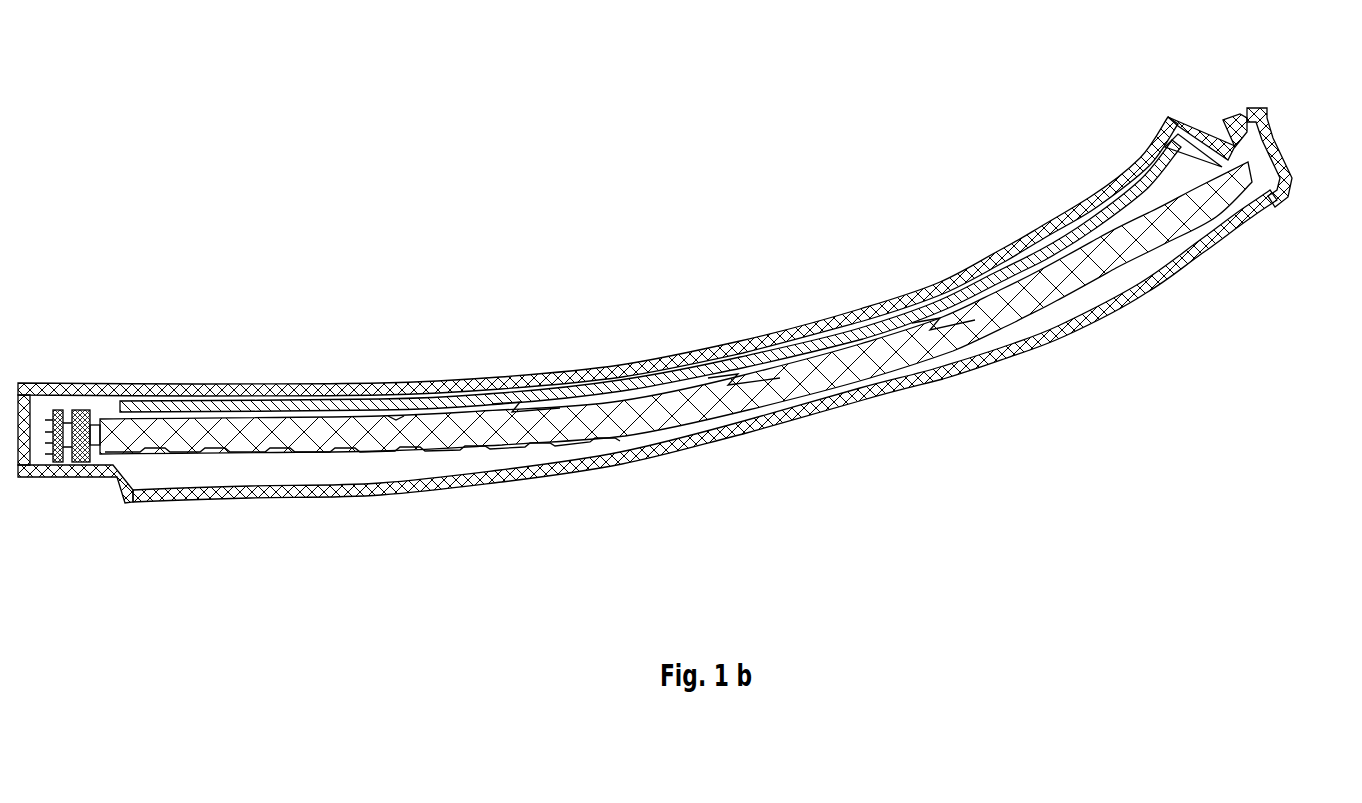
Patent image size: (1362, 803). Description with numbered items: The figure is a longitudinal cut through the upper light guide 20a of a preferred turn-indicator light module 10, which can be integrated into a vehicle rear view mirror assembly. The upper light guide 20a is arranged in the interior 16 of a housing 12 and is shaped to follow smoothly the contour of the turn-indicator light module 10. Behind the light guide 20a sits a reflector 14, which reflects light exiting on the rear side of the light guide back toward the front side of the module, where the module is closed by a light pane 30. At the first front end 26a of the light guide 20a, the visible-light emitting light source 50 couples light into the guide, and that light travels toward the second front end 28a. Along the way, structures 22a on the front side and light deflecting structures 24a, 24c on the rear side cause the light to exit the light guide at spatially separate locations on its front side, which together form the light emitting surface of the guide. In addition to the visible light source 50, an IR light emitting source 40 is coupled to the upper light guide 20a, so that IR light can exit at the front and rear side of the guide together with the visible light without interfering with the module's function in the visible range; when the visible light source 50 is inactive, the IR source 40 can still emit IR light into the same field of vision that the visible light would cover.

The turn-indicator light module 10 is at (222, 242).
The housing 12 is at (568, 362).
The reflector 14 is at (628, 387).
The interior 16 is at (1117, 176).
The upper light guide 20a is at (1120, 272).
The structures 22a is at (466, 452).
The light deflecting structures 24a is at (497, 398).
The light deflecting structures 24c is at (408, 420).
The first front end 26a is at (100, 424).
The second front end 28a is at (1283, 165).
The light pane 30 is at (957, 375).
The IR light emitting source 40 is at (73, 463).
The visible-light emitting light source 50 is at (90, 488).